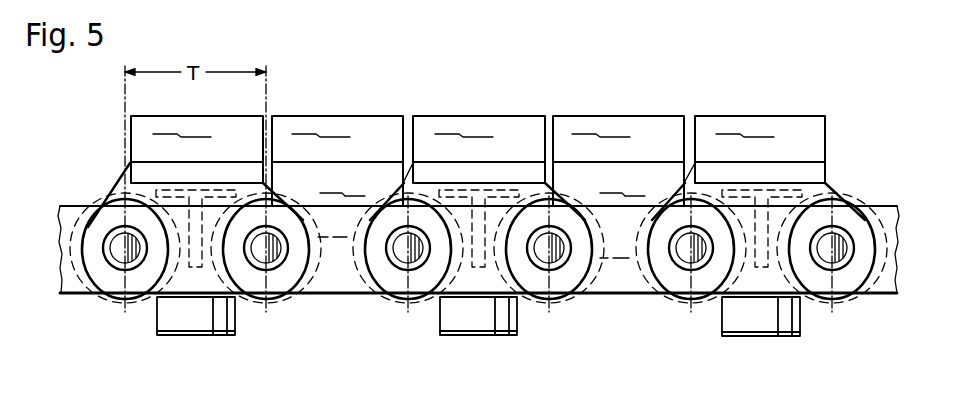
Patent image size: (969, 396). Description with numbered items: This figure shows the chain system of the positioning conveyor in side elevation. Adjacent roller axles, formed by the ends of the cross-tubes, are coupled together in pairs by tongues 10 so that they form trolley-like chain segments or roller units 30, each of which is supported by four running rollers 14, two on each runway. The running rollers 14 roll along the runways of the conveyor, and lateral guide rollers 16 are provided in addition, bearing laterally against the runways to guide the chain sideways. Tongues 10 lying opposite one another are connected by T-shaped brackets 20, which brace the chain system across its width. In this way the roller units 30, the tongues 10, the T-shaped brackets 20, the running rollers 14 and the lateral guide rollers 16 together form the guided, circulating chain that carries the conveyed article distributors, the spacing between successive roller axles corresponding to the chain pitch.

The tongue 10 is at (102, 270).
The running roller 14 is at (392, 295).
The lateral guide roller 16 is at (505, 322).
The T-shaped bracket 20 is at (478, 194).
The roller unit 30 is at (432, 182).